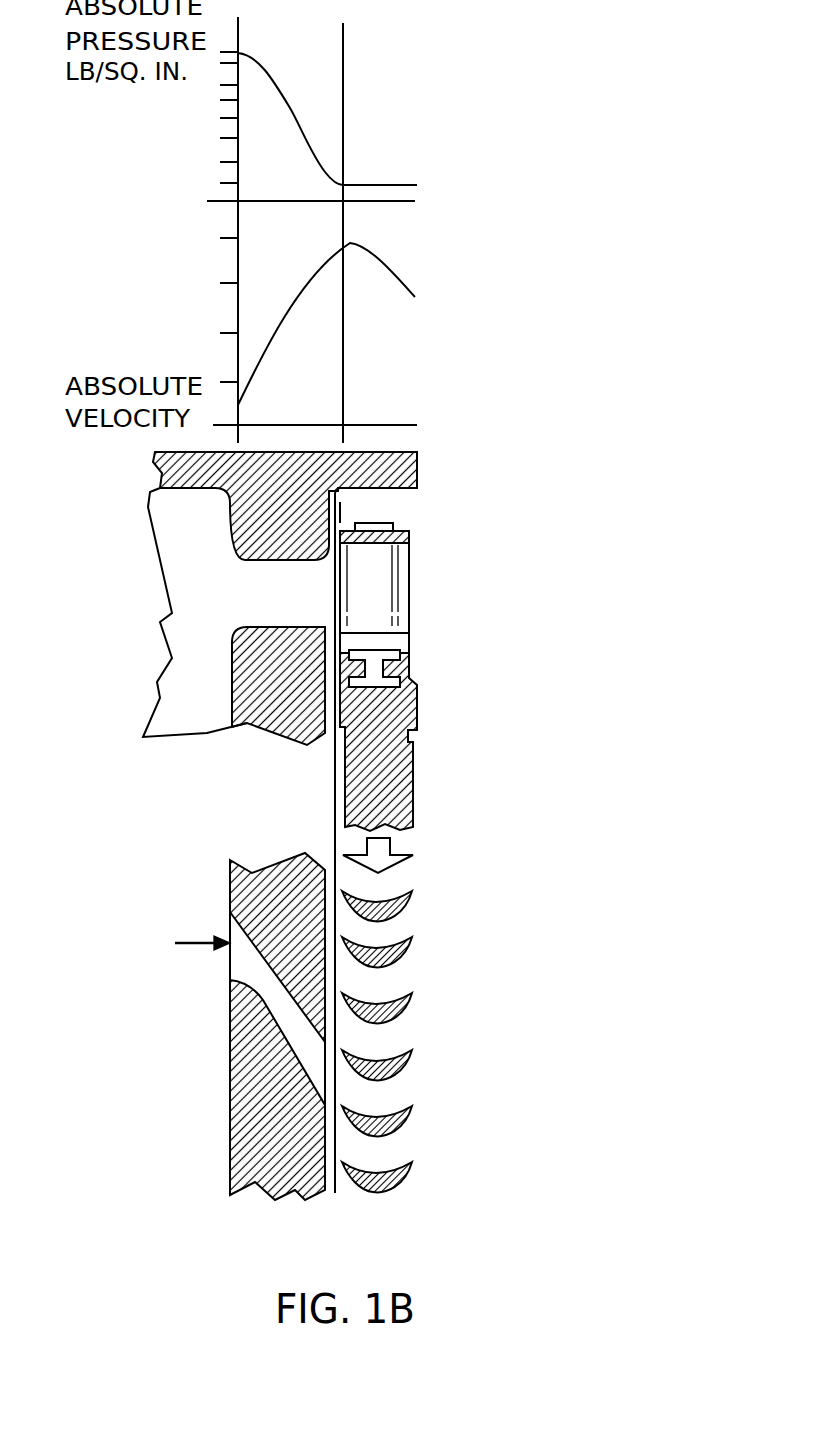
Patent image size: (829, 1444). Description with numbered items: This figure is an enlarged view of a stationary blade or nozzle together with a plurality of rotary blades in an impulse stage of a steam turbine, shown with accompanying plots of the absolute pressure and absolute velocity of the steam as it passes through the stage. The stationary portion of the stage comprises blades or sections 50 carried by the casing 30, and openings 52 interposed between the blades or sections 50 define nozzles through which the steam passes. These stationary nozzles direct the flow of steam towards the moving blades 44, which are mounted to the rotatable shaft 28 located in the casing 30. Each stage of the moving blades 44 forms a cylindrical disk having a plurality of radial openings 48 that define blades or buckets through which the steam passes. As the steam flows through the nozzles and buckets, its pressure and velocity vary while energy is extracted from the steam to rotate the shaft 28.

The rotatable shaft 28 is at (418, 787).
The casing 30 is at (418, 470).
The blades 44 is at (396, 598).
The radial openings 48 is at (375, 1044).
The blades or sections 50 is at (201, 1010).
The openings 52 is at (228, 965).